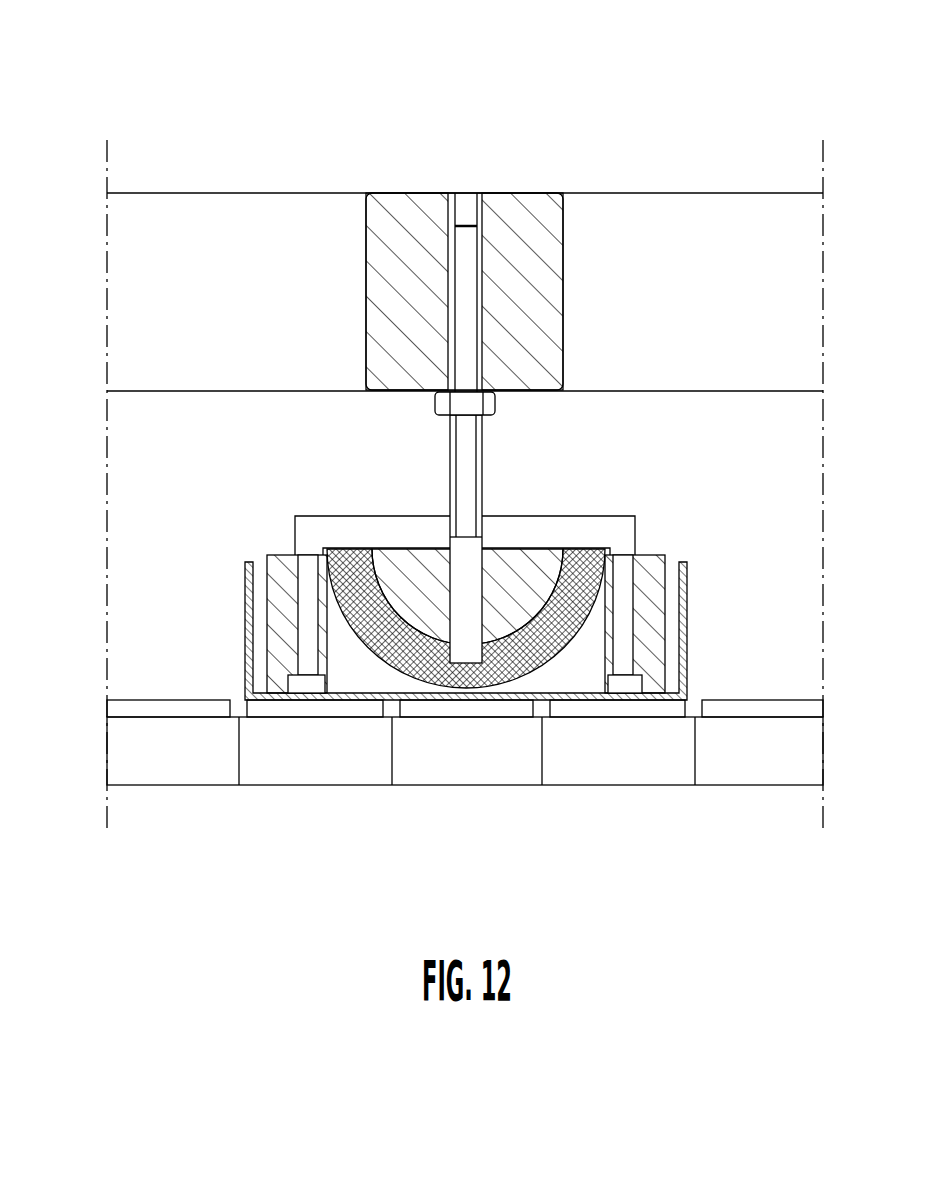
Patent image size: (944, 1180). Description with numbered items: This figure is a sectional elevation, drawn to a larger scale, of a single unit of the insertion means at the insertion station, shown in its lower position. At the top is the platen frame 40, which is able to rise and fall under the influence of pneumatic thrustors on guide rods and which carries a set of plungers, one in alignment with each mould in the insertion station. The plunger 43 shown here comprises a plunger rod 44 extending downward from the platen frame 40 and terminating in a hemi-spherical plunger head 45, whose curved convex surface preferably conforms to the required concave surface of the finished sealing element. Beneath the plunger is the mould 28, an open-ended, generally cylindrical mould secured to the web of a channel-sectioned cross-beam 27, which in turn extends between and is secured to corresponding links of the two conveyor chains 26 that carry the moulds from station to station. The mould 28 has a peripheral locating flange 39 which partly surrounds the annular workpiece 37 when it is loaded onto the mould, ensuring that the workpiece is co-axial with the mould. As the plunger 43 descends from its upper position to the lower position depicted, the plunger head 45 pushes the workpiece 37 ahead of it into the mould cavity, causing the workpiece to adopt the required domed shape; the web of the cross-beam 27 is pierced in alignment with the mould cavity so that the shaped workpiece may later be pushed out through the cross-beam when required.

The conveyor chain 26 is at (465, 804).
The cross-beam 27 is at (563, 572).
The mould 28 is at (575, 624).
The workpiece 37 is at (466, 728).
The peripheral locating flange 39 is at (588, 435).
The platen frame 40 is at (567, 195).
The plunger 43 is at (494, 320).
The plunger rod 44 is at (273, 428).
The hemi-spherical plunger head 45 is at (306, 618).